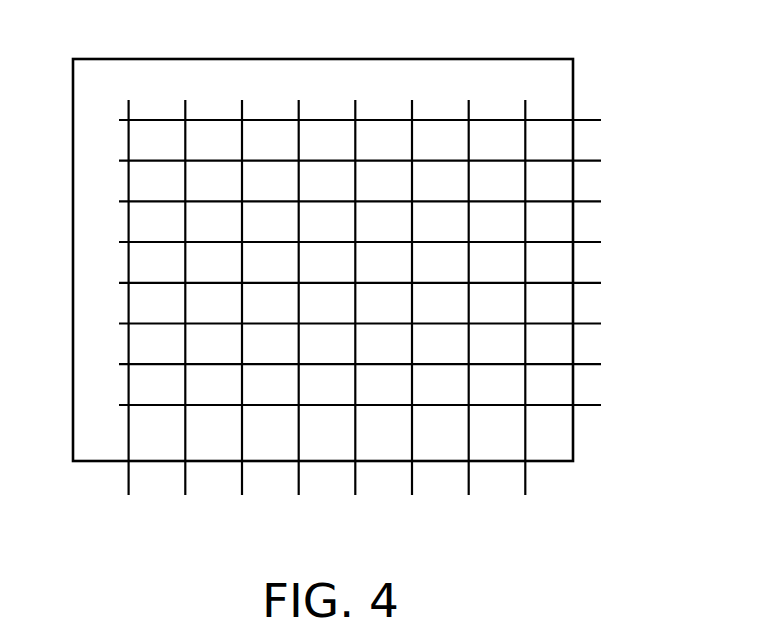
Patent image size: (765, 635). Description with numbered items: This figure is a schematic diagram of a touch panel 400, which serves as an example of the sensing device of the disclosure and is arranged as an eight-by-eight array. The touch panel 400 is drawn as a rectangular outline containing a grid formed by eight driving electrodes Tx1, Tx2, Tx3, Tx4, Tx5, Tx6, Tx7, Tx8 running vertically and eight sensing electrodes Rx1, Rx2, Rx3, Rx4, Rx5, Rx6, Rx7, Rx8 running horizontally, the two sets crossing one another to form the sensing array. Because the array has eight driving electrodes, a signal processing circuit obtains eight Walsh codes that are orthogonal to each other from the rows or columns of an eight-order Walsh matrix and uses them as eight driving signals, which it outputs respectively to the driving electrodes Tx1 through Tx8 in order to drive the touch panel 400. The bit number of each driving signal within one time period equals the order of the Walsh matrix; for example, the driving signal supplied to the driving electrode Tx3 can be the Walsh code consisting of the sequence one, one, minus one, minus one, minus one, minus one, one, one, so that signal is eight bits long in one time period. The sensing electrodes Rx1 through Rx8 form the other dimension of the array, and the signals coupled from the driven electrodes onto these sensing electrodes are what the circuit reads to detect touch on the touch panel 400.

The touch panel 400 is at (517, 58).
The driving electrode Tx1 is at (128, 318).
The driving electrode Tx2 is at (185, 318).
The driving electrode Tx3 is at (241, 318).
The driving electrode Tx4 is at (298, 318).
The driving electrode Tx5 is at (355, 318).
The driving electrode Tx6 is at (411, 318).
The driving electrode Tx7 is at (468, 318).
The driving electrode Tx8 is at (525, 318).
The sensing electrode Rx1 is at (382, 121).
The sensing electrode Rx2 is at (382, 162).
The sensing electrode Rx3 is at (382, 202).
The sensing electrode Rx4 is at (382, 243).
The sensing electrode Rx5 is at (382, 284).
The sensing electrode Rx6 is at (382, 325).
The sensing electrode Rx7 is at (382, 365).
The sensing electrode Rx8 is at (382, 406).